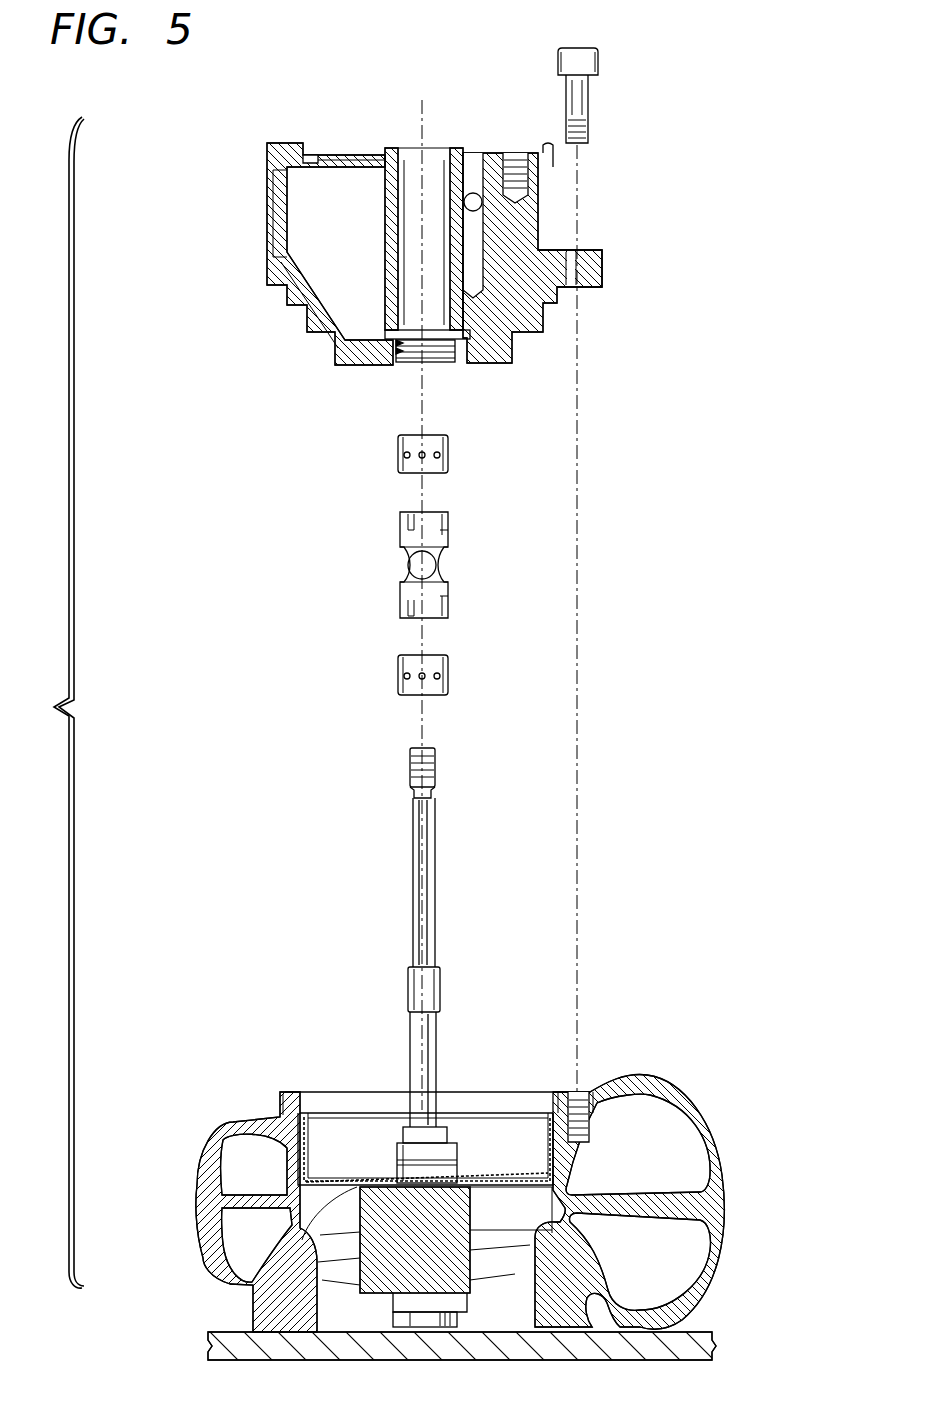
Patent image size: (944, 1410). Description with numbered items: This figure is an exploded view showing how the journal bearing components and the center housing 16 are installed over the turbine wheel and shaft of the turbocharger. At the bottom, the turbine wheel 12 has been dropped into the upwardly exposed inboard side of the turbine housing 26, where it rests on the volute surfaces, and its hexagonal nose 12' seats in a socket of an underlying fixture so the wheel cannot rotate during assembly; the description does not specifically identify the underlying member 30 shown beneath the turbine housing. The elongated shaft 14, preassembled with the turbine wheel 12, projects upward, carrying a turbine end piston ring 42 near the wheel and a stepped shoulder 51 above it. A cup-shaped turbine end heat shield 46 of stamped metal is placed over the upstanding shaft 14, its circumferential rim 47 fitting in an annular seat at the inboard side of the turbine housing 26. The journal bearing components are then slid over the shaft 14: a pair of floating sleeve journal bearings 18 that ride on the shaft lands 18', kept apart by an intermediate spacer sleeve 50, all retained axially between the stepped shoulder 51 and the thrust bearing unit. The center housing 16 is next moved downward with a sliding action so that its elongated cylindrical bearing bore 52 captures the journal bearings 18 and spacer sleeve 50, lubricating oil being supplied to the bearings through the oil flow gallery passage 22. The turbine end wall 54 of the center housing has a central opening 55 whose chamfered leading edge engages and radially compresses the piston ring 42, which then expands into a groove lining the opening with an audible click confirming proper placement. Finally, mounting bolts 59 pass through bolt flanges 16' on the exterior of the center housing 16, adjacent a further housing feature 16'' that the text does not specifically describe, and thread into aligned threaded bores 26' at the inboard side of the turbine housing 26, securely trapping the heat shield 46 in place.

The mounting bolts 59 is at (592, 92).
The cylindrical bearing bore 52 is at (416, 152).
The oil flow gallery passage 22 is at (470, 158).
The threaded bore of bearing housing 16'' is at (573, 178).
The bolt flanges 16' is at (605, 247).
The center housing 16 is at (546, 256).
The turbine end wall 54 is at (357, 360).
The central opening 55 is at (428, 363).
The journal bearings 18 is at (453, 564).
The spacer sleeve 50 is at (428, 598).
The shaft 14 is at (433, 871).
The shaft lands 18' is at (459, 1051).
The circumferential rim 47 is at (305, 1115).
The stepped shoulder 51 is at (402, 1115).
The turbine end heat shield 46 is at (345, 1180).
The turbine end piston ring 42 is at (455, 1162).
The threaded bores 26' is at (597, 1083).
The turbine housing 26 is at (481, 1187).
The turbine wheel 12 is at (427, 1249).
The hexagonal nose 12' is at (414, 1348).
The base plate 30 is at (710, 1330).